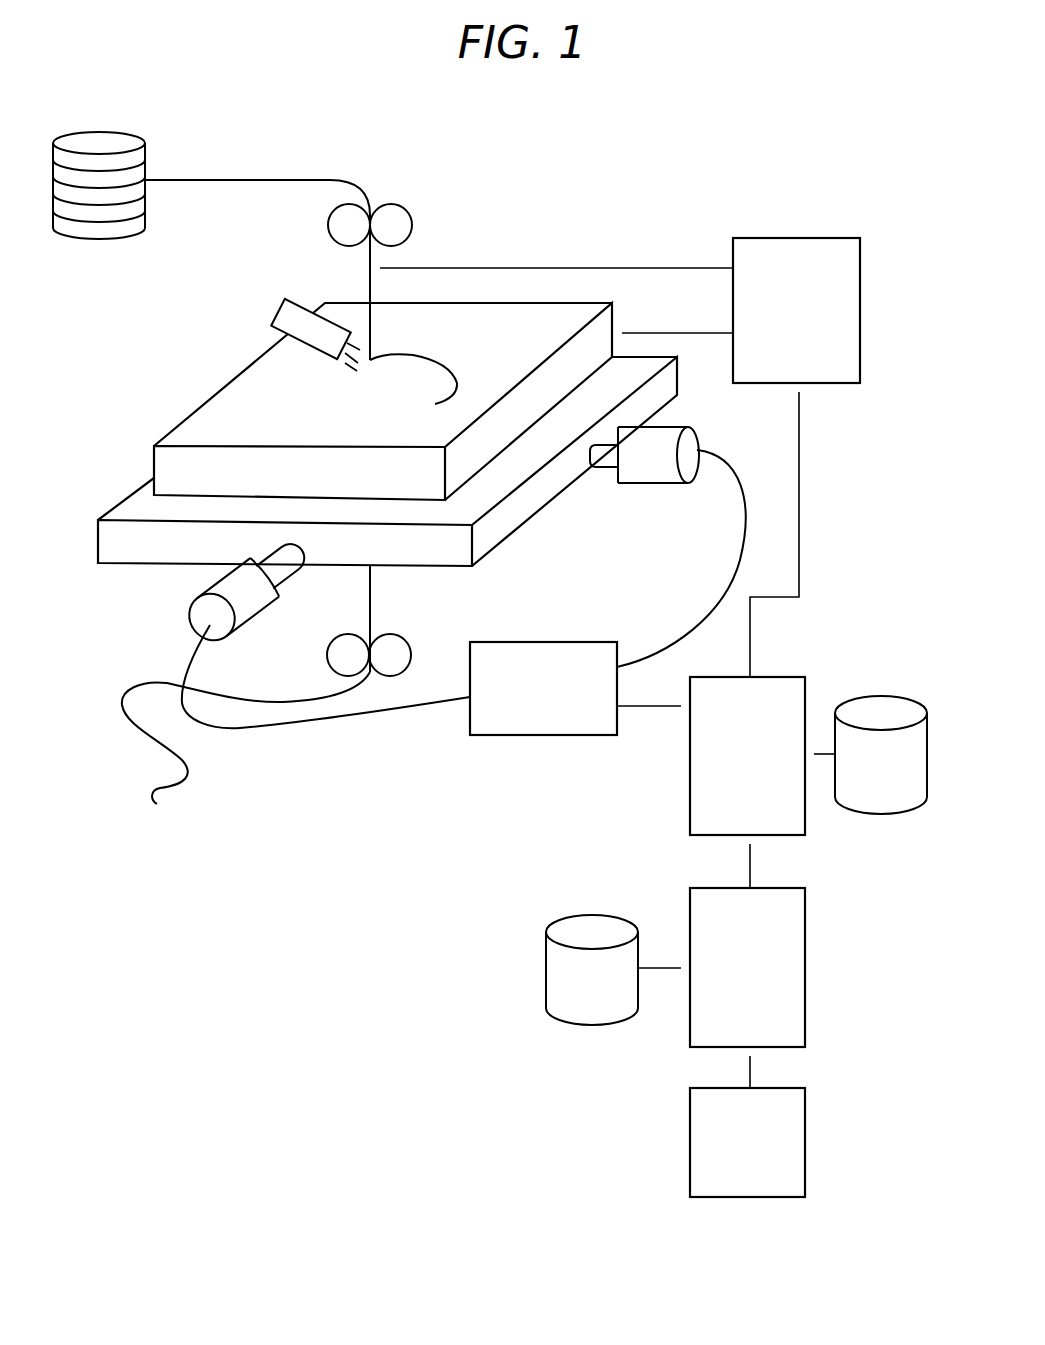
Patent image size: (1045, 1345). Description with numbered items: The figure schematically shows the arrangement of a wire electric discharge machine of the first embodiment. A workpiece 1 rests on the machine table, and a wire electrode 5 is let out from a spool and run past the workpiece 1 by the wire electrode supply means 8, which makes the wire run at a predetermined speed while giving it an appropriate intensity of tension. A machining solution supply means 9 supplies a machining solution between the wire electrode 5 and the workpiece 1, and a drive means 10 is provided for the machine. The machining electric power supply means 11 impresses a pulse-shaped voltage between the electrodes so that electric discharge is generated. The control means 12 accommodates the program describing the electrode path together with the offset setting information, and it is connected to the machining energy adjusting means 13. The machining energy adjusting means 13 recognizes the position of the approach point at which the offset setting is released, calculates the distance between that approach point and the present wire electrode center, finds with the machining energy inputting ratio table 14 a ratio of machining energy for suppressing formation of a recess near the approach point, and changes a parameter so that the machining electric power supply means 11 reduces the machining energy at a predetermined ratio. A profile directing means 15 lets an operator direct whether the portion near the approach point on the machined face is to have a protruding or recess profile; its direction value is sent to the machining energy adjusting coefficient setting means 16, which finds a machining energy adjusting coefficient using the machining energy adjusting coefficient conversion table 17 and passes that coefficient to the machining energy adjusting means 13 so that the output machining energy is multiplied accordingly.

The workpiece 1 is at (232, 391).
The wire electrode 5 is at (238, 178).
The wire electrode supply means 8 is at (413, 222).
The machining solution supply means 9 is at (283, 315).
The drive means 10 is at (658, 484).
The machining electric power supply means 11 is at (798, 238).
The control means 12 is at (558, 642).
The machining energy adjusting means 13 is at (779, 677).
The machining energy inputting ratio table 14 is at (852, 697).
The profile directing means 15 is at (805, 1178).
The machining energy adjusting coefficient setting means 16 is at (805, 988).
The machining energy adjusting coefficient conversion table 17 is at (546, 990).